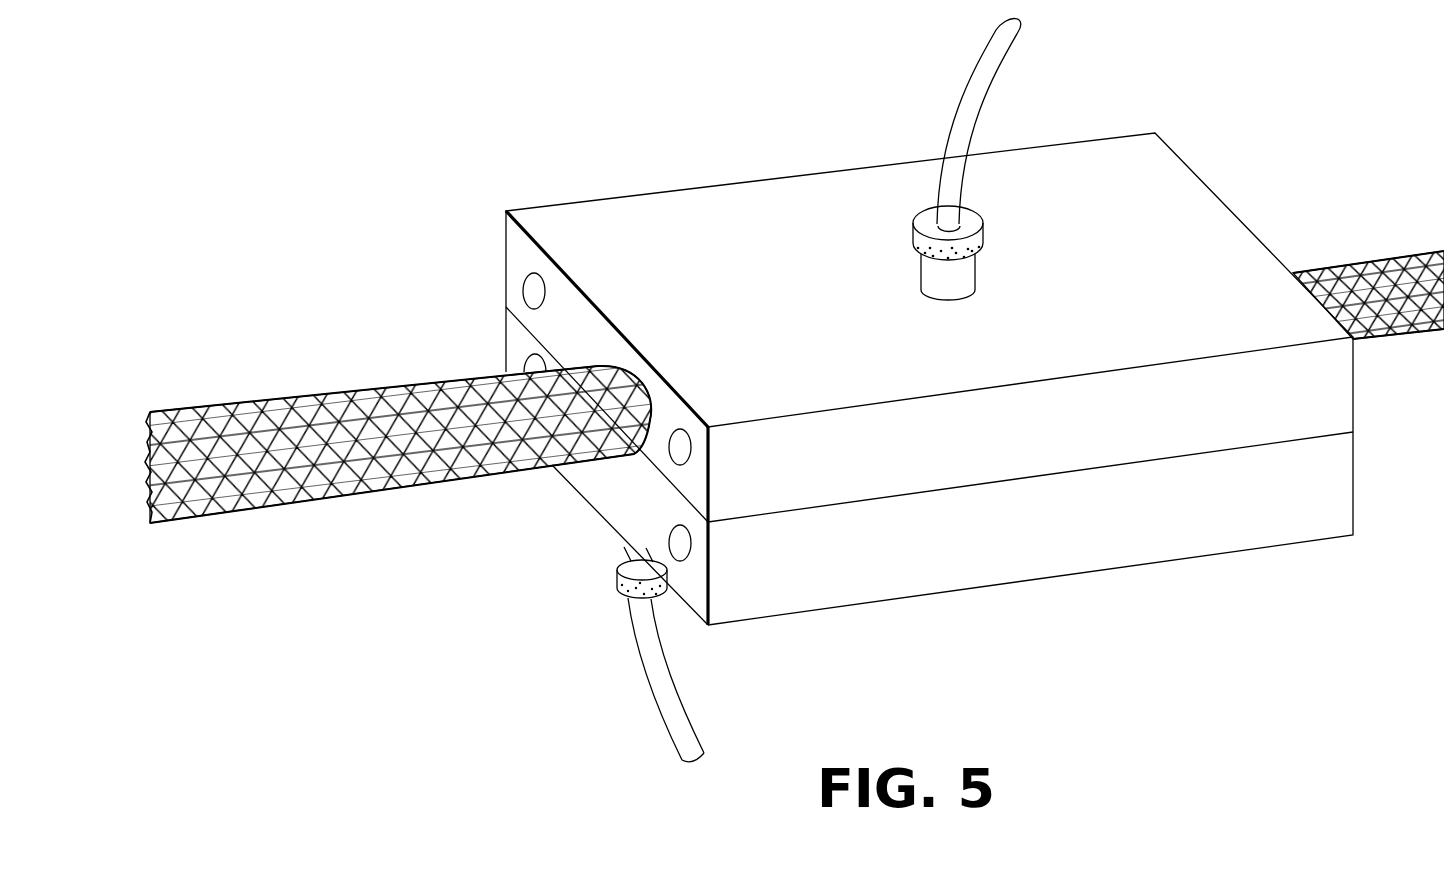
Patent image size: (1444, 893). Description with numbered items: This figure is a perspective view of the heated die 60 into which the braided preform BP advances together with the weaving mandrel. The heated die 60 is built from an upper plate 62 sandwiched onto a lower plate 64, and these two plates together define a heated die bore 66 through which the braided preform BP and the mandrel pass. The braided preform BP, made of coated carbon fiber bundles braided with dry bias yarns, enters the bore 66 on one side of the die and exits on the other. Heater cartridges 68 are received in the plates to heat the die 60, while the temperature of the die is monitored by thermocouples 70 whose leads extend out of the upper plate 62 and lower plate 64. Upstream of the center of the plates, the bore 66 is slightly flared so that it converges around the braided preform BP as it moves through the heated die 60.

The heated die 60 is at (929, 427).
The upper plate 62 is at (765, 207).
The lower plate 64 is at (1033, 558).
The heated die bore 66 is at (605, 463).
The heater cartridges 68 is at (530, 366).
The thermocouples 70 is at (963, 92).
The braided preform BP is at (240, 510).